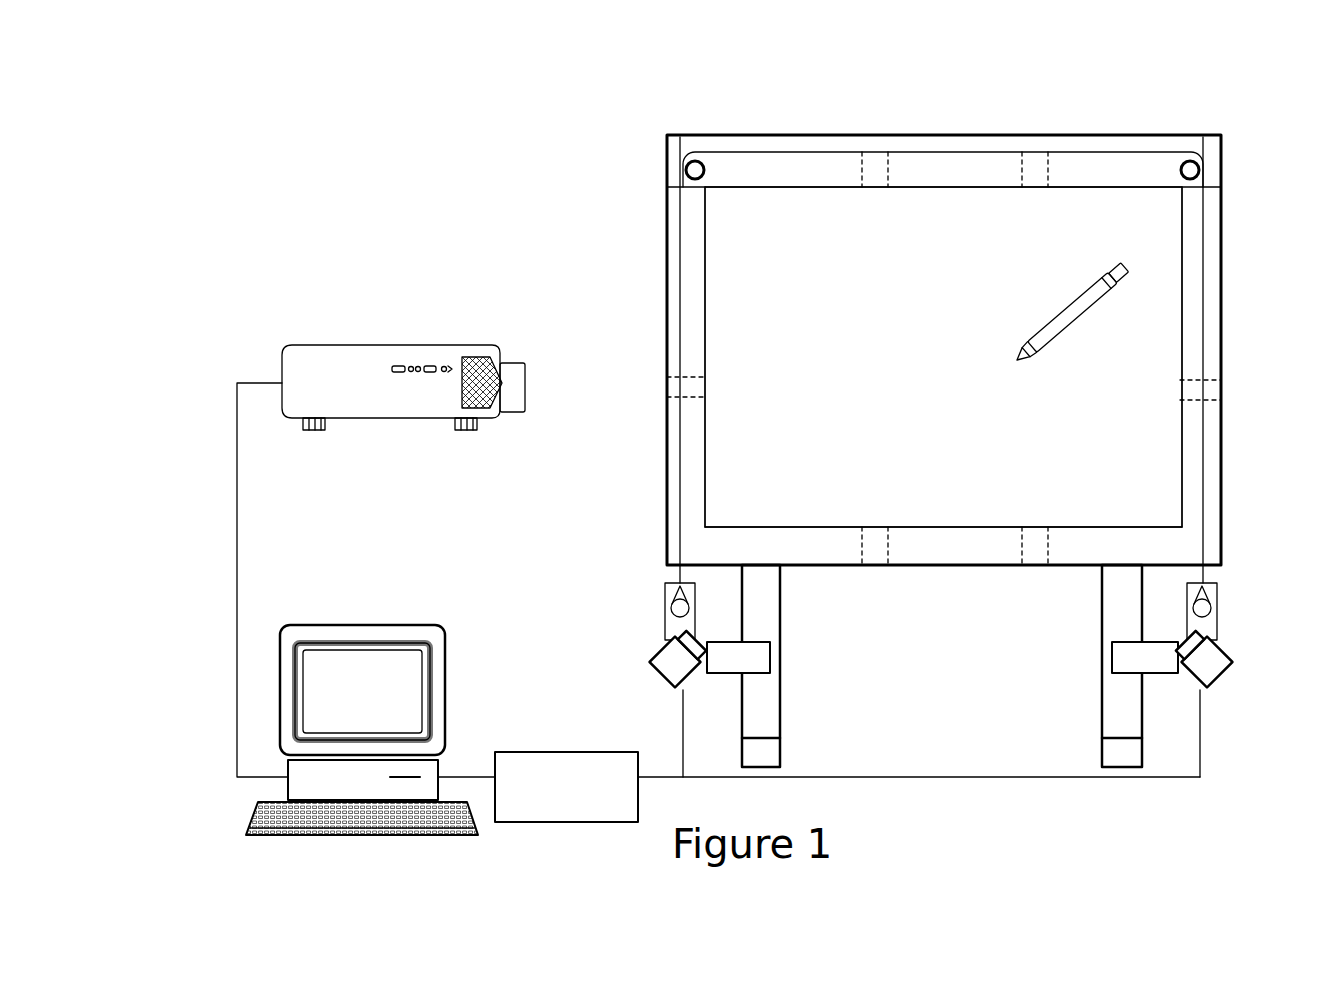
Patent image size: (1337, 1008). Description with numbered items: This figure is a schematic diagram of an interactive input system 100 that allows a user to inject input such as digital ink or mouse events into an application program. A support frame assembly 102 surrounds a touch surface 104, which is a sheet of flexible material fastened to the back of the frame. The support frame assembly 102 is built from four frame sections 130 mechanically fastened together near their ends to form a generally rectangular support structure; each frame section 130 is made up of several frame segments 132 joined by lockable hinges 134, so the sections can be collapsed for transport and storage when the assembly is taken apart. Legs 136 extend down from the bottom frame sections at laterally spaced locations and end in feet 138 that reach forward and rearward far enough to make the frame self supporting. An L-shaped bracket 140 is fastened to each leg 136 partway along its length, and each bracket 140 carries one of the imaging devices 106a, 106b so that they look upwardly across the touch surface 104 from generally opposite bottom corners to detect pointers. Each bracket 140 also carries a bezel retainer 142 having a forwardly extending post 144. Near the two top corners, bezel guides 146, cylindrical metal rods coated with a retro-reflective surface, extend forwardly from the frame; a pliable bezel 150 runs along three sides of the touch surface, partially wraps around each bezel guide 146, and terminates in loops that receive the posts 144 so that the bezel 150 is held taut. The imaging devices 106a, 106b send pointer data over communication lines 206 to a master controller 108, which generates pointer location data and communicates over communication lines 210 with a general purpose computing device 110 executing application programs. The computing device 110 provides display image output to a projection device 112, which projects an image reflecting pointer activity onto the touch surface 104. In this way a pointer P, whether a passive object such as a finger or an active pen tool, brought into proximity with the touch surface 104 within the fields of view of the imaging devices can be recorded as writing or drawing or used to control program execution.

The interactive input system 100 is at (497, 160).
The support frame assembly 102 is at (1133, 130).
The touch surface 104 is at (945, 383).
The imaging device 106a is at (672, 688).
The imaging device 106b is at (1207, 690).
The master controller 108 is at (697, 340).
The general purpose computing device 110 is at (395, 637).
The projection device 112 is at (370, 357).
The frame section 130 is at (814, 130).
The frame segment 132 is at (695, 258).
The lockable hinge 134 is at (874, 190).
The leg 136 is at (765, 603).
The foot 138 is at (765, 745).
The L-shaped bracket 140 is at (760, 652).
The bezel retainer 142 is at (665, 634).
The post 144 is at (663, 610).
The bezel guide 146 is at (686, 170).
The pliable bezel 150 is at (680, 462).
The communication lines 206 is at (1000, 777).
The communication lines 210 is at (465, 772).
The pointer P is at (1085, 298).